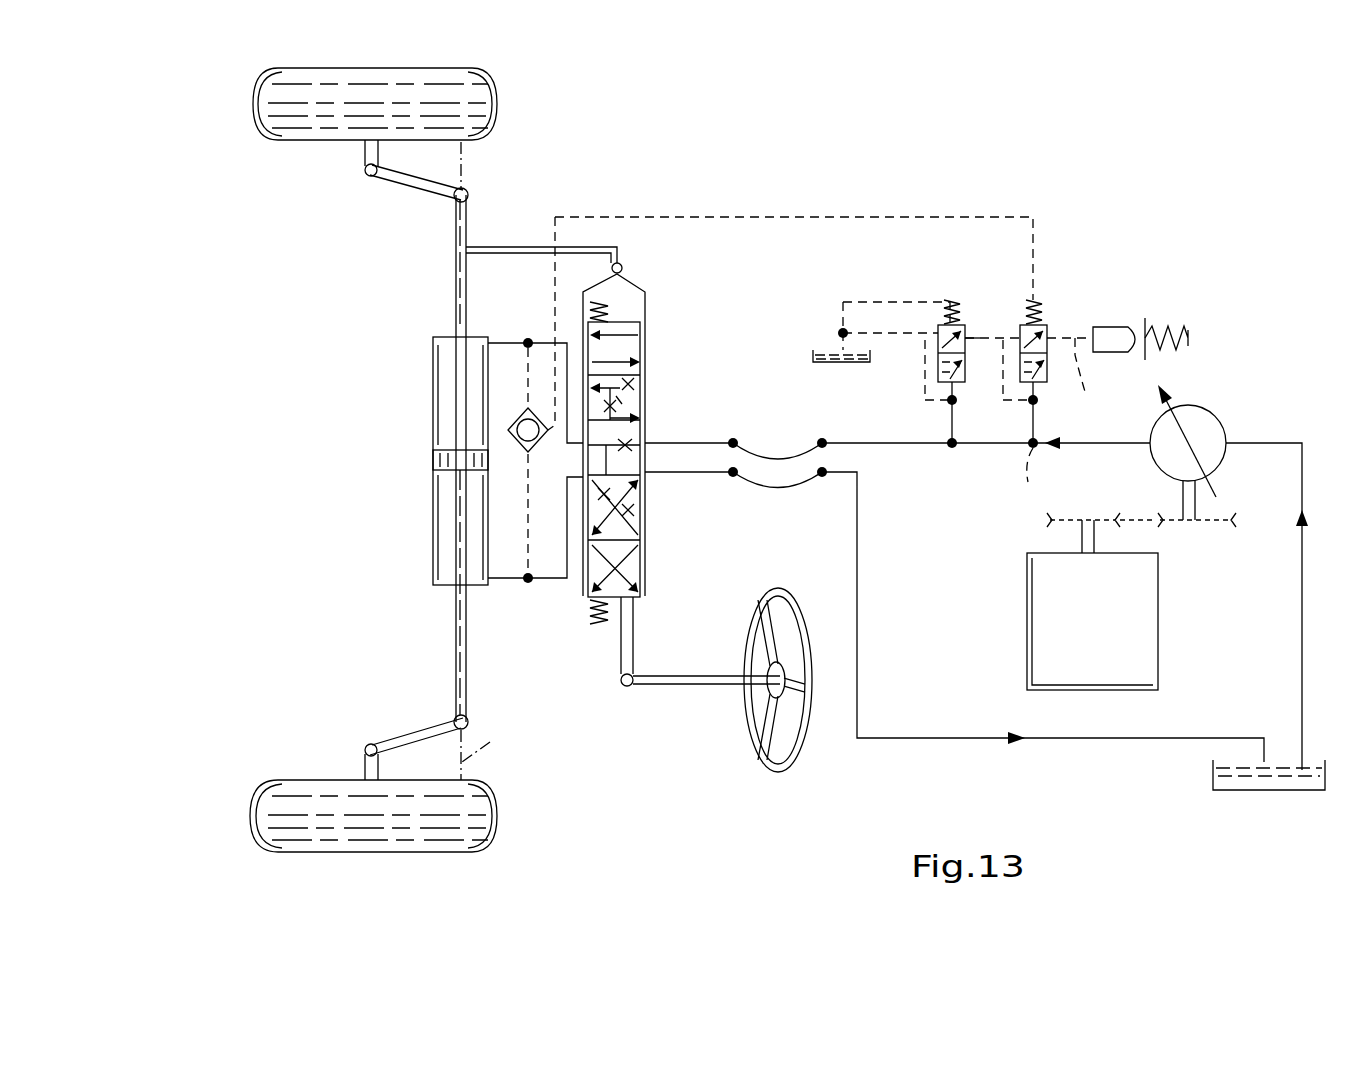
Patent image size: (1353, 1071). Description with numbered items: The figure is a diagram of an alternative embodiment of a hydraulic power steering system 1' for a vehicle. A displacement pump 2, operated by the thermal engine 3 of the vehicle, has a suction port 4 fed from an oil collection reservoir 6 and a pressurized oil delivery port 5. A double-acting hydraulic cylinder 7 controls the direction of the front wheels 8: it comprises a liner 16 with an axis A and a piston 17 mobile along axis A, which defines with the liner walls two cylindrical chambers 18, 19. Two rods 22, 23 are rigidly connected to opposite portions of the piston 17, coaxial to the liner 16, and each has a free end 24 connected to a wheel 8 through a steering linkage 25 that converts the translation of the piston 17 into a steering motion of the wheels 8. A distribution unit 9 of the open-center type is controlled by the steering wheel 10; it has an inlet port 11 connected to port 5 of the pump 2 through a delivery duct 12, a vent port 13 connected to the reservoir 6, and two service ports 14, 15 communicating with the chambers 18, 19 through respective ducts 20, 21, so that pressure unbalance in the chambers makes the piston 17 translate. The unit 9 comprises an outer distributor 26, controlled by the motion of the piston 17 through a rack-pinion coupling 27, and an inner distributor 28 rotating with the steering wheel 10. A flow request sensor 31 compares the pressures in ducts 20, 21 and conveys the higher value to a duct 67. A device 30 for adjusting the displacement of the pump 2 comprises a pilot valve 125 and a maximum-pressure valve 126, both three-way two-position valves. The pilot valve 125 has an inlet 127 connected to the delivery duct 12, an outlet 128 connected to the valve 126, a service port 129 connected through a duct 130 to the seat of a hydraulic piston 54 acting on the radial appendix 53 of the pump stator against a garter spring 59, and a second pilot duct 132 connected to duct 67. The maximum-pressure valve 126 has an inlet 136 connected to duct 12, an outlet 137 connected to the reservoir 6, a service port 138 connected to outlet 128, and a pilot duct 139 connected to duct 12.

The hydraulic power steering system 1' is at (692, 709).
The displacement pump 2 is at (1210, 455).
The thermal engine 3 is at (1140, 636).
The suction port 4 is at (1228, 440).
The pressurized oil delivery port 5 is at (1165, 412).
The reservoir 6 is at (1213, 775).
The double-acting hydraulic cylinder 7 is at (420, 528).
The front wheels 8 is at (480, 106).
The distribution unit 9 is at (656, 325).
The steering wheel 10 is at (765, 775).
The inlet port 11 is at (646, 440).
The delivery duct 12 is at (912, 448).
The vent port 13 is at (648, 477).
The service port 14 is at (580, 440).
The service port 15 is at (578, 545).
The liner 16 is at (433, 417).
The piston 17 is at (440, 462).
The cylindrical chamber 18 is at (445, 385).
The cylindrical chamber 19 is at (446, 548).
The duct 20 is at (488, 343).
The duct 21 is at (540, 585).
The rod 22 is at (456, 288).
The rod 23 is at (460, 510).
The free end 24 is at (452, 208).
The steering linkage 25 is at (400, 203).
The outer distributor 26 is at (650, 325).
The rack-pinion coupling 27 is at (478, 232).
The inner distributor 28 is at (606, 600).
The device for adjusting displacement of pump 30 is at (955, 275).
The flow request sensor 31 is at (524, 462).
The radial appendix 53 is at (1147, 318).
The hydraulic piston 54 is at (1110, 336).
The garter spring 59 is at (1190, 332).
The duct 67 is at (746, 216).
The pilot valve 125 is at (1060, 270).
The maximum-pressure valve 126 is at (928, 315).
The inlet 127 is at (1026, 348).
The outlet 128 is at (1042, 276).
The service port 129 is at (1050, 340).
The duct 130 is at (1096, 382).
The second pilot duct 132 is at (1036, 474).
The inlet 136 is at (938, 348).
The outlet 137 is at (940, 326).
The service port 138 is at (968, 338).
The pilot duct 139 is at (950, 428).
The axis A is at (487, 740).